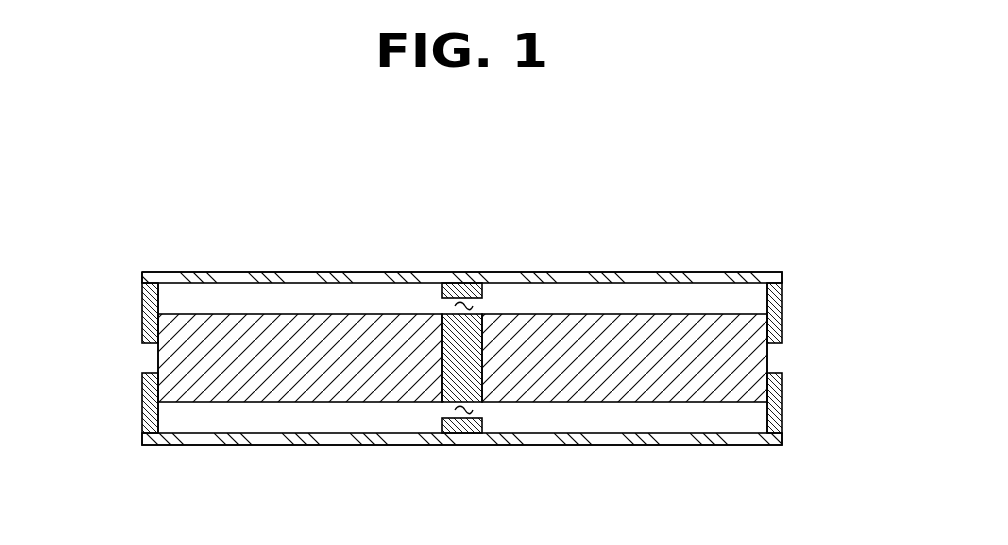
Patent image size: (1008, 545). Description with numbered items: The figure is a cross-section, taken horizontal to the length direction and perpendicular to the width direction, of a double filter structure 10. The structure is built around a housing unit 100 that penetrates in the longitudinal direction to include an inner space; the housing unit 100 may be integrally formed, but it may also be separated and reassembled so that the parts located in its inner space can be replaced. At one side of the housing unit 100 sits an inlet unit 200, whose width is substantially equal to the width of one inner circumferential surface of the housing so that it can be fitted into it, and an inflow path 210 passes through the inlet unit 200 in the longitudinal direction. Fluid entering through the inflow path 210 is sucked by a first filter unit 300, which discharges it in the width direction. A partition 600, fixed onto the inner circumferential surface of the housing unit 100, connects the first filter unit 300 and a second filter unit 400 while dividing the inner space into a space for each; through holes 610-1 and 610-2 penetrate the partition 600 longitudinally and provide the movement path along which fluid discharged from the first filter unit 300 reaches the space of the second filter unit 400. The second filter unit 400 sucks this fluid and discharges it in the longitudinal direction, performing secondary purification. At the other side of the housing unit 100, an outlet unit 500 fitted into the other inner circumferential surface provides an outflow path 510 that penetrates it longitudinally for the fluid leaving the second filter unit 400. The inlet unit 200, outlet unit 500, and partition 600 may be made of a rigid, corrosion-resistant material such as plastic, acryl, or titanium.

The double filter structure 10 is at (268, 152).
The housing unit 100 is at (343, 272).
The inlet unit 200 is at (148, 302).
The inflow path 210 is at (148, 367).
The first filter unit 300 is at (265, 380).
The second filter unit 400 is at (632, 380).
The outlet unit 500 is at (772, 305).
The outflow path 510 is at (776, 370).
The partition 600 is at (453, 373).
The through hole 610-1 is at (468, 287).
The through hole 610-2 is at (455, 433).